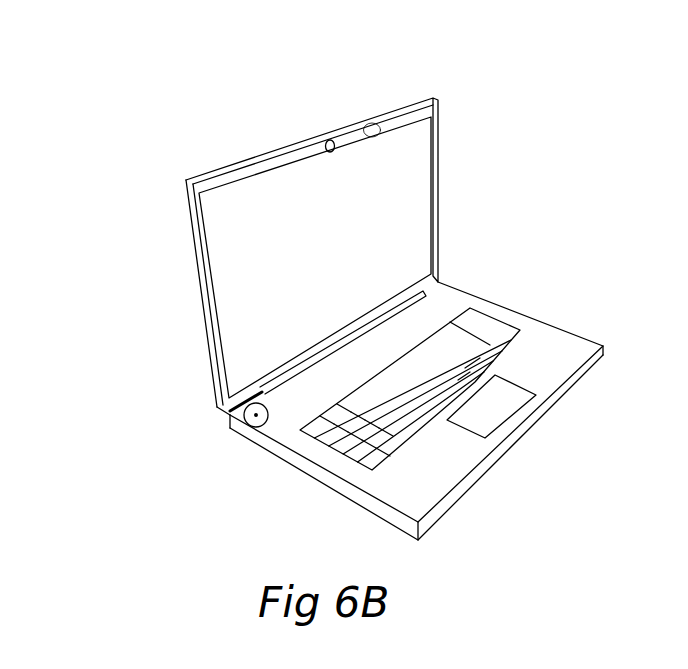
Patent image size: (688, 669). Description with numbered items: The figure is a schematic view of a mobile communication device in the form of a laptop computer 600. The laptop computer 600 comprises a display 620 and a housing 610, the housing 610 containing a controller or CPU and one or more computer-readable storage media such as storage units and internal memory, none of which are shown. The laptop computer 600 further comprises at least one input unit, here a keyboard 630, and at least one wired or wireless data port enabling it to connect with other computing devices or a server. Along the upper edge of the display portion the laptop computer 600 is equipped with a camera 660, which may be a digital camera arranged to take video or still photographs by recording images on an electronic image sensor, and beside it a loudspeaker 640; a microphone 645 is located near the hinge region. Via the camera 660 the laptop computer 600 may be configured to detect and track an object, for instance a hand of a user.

The laptop computer 600 is at (257, 161).
The housing 610 is at (184, 181).
The display 620 is at (220, 270).
The keyboard 630 is at (310, 441).
The loudspeaker 640 is at (378, 122).
The microphone 645 is at (230, 413).
The camera 660 is at (330, 140).